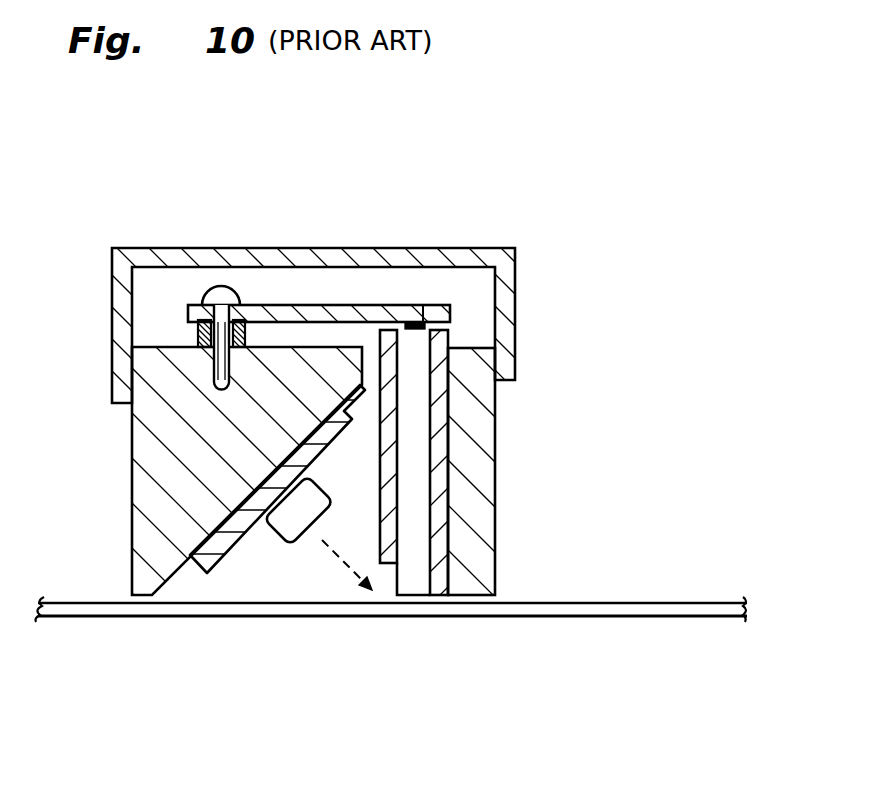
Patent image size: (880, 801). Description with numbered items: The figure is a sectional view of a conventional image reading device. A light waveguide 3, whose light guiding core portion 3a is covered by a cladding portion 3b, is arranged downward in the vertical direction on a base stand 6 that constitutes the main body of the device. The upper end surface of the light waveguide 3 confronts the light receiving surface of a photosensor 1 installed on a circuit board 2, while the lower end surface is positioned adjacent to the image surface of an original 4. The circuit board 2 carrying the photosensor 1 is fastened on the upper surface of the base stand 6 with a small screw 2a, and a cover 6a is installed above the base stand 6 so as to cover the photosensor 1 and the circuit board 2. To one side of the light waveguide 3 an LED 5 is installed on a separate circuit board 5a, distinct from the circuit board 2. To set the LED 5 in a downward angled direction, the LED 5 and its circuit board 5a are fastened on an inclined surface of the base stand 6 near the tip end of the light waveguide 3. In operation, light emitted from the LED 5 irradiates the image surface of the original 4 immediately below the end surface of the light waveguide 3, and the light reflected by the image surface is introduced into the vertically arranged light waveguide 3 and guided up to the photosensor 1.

The photosensor 1 is at (412, 322).
The circuit board 2 is at (300, 307).
The small screw 2a is at (213, 295).
The light waveguide 3 is at (407, 462).
The light guiding core portion 3a is at (413, 583).
The cladding portion 3b is at (385, 538).
The original 4 is at (578, 607).
The LED 5 is at (295, 527).
The circuit board 5a is at (217, 545).
The base stand 6 is at (155, 482).
The cover 6a is at (455, 262).